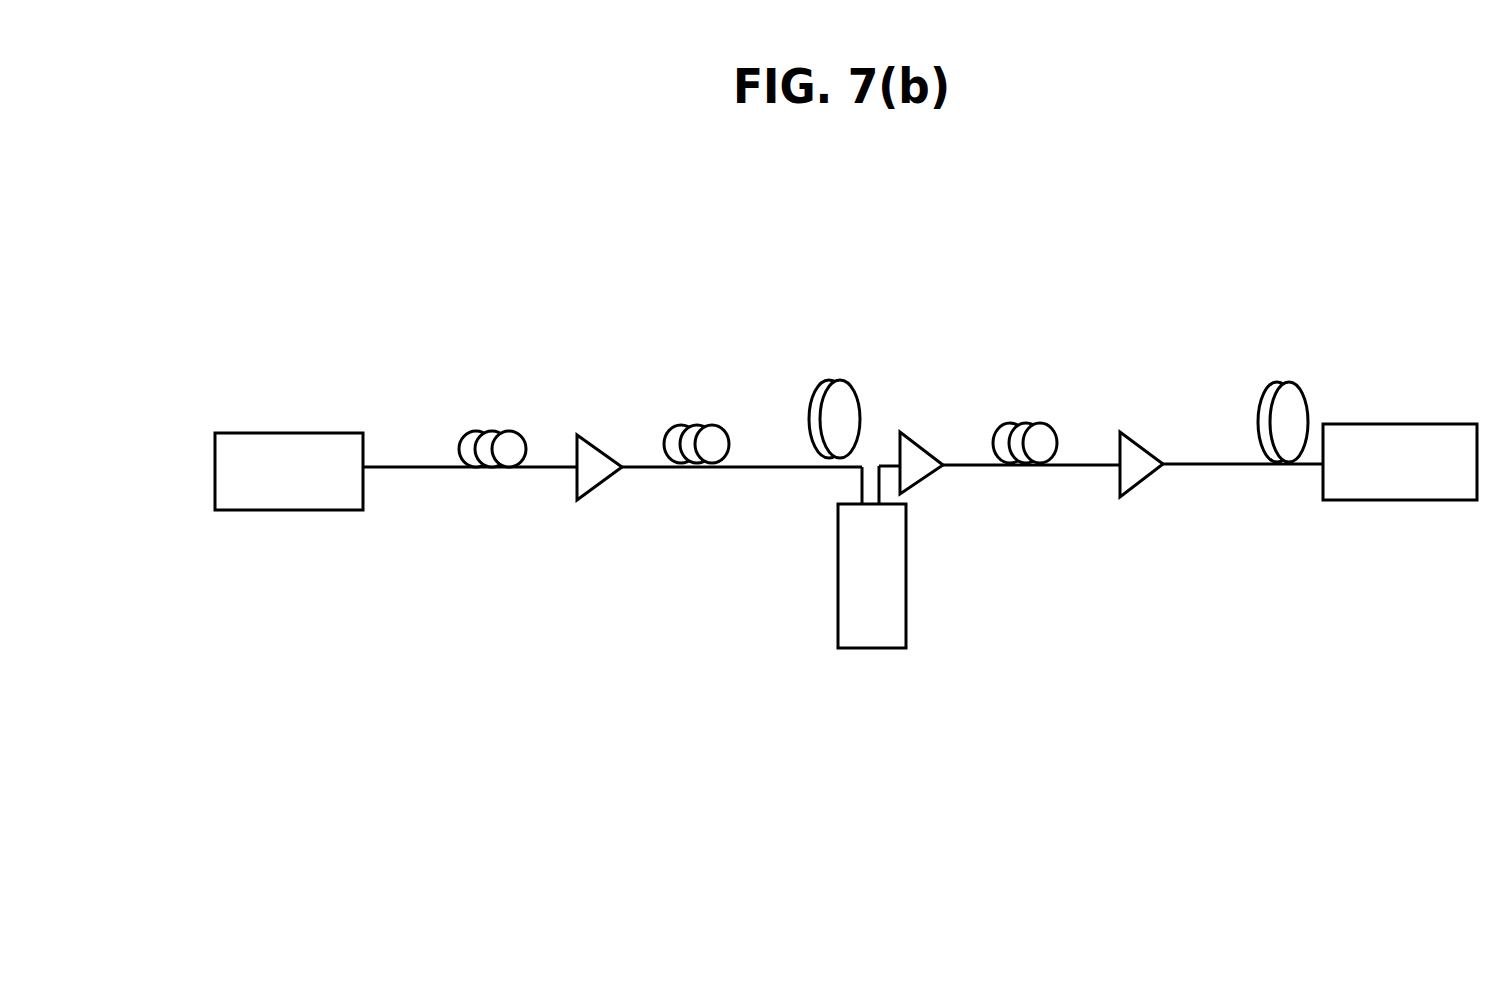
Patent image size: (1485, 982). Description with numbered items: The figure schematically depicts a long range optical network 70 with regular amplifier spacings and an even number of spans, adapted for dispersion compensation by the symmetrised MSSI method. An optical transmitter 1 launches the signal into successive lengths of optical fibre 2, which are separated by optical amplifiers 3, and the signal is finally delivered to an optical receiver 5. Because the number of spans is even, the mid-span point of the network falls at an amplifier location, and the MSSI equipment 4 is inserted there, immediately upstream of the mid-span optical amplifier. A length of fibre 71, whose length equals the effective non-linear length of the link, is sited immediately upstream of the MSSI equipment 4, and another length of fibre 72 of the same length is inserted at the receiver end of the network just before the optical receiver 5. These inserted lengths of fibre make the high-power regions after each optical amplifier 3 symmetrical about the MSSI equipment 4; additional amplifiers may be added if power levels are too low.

The optical transmitter 1 is at (282, 406).
The lengths of optical fibre 2 is at (473, 407).
The optical amplifiers 3 is at (596, 426).
The MSSI equipment 4 is at (816, 598).
The optical receiver 5 is at (1394, 409).
The optical network 70 is at (1004, 525).
The length of fibre 71 is at (828, 371).
The length of fibre 72 is at (1280, 477).